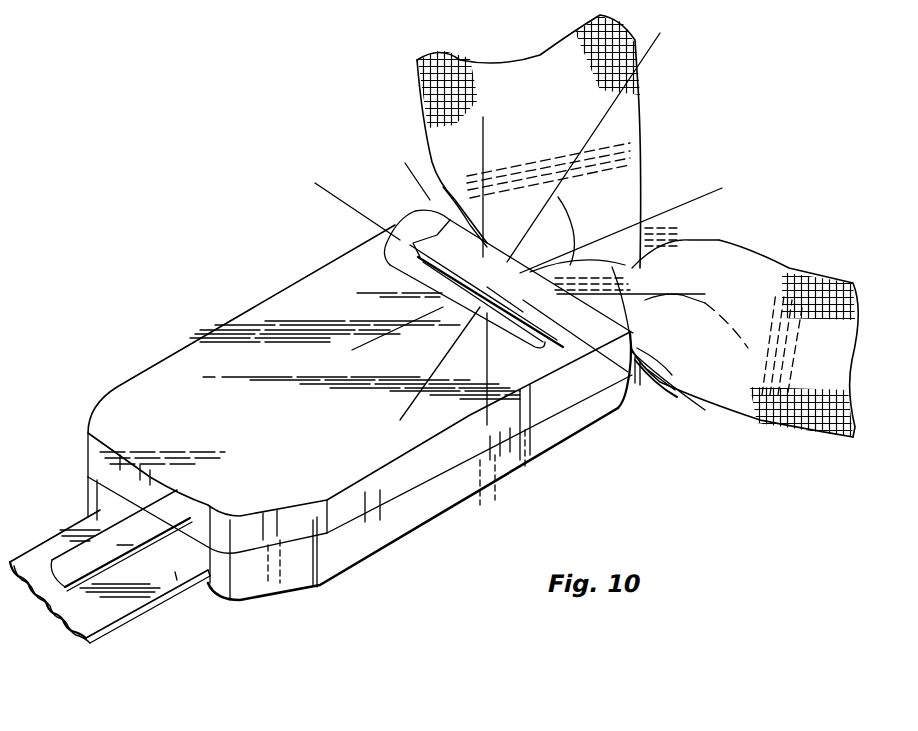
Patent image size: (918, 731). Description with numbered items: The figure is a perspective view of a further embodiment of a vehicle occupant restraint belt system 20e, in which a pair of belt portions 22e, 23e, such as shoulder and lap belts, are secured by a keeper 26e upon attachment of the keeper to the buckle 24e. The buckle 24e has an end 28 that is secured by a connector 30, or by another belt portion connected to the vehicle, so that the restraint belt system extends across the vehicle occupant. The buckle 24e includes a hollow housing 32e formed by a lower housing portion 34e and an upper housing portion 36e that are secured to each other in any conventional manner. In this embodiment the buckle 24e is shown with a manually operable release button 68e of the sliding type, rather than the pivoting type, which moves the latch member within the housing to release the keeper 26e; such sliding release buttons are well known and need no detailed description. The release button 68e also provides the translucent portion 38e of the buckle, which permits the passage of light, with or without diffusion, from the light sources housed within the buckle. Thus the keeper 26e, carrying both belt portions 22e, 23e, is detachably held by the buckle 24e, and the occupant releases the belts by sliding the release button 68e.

The vehicle occupant restraint belt system 20e is at (698, 167).
The belt portion 22e is at (617, 35).
The belt portion 23e is at (789, 268).
The buckle 24e is at (302, 205).
The keeper 26e is at (660, 230).
The end 28 is at (119, 636).
The connector 30 is at (52, 548).
The hollow housing 32e is at (415, 485).
The lower housing portion 34e is at (367, 543).
The upper housing portion 36e is at (467, 438).
The translucent portion 38e is at (430, 237).
The release button 68e is at (353, 250).